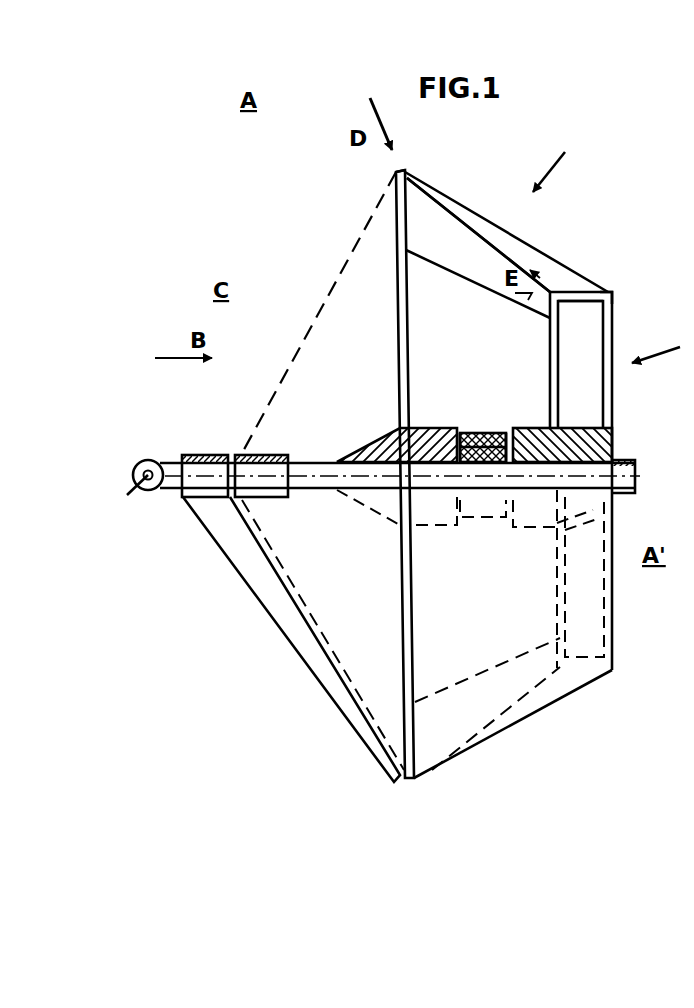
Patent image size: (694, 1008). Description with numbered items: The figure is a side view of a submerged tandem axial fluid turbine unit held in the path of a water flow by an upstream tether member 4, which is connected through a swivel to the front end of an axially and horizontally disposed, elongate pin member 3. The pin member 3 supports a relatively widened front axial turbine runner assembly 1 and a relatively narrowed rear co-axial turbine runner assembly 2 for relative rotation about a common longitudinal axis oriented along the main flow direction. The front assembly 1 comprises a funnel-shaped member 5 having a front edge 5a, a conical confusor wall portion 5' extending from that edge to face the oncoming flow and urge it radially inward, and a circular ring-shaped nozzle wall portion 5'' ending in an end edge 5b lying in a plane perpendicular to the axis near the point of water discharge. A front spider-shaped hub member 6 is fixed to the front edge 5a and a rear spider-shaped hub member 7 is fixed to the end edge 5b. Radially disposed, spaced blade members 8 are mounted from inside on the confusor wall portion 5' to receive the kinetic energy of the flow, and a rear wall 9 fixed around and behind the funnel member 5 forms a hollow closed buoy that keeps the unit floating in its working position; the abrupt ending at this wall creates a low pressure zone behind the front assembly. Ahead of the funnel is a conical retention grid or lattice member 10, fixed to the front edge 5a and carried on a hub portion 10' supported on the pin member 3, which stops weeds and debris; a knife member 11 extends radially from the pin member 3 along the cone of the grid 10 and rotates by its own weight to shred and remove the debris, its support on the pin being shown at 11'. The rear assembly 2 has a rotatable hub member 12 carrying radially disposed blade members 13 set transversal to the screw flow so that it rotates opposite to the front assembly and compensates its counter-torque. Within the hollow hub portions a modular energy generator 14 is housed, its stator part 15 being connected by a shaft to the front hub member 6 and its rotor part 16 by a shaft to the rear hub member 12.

The front axial turbine runner assembly 1 is at (546, 166).
The rear co-axial turbine runner assembly 2 is at (656, 343).
The pin member 3 is at (320, 460).
The tether member 4 is at (128, 506).
The funnel-shaped member 5 is at (506, 232).
The confusor wall portion 5' is at (483, 270).
The nozzle wall portion 5'' is at (599, 269).
The front edge 5a is at (409, 171).
The end edge 5b is at (607, 292).
The front spider-shaped hub member 6 is at (416, 430).
The rear spider-shaped hub member 7 is at (613, 347).
The blade members 8 is at (455, 247).
The rear wall 9 is at (507, 193).
The retention grid or lattice member 10 is at (318, 313).
The second sleeve 10' is at (251, 437).
The scraper or knife member 11 is at (293, 639).
The first sleeve 11' is at (197, 516).
The hub member 12 is at (568, 450).
The blade members 13 is at (583, 392).
The modular energy generator 14 is at (508, 373).
The generator stator part 15 is at (473, 428).
The generator rotor part 16 is at (502, 426).